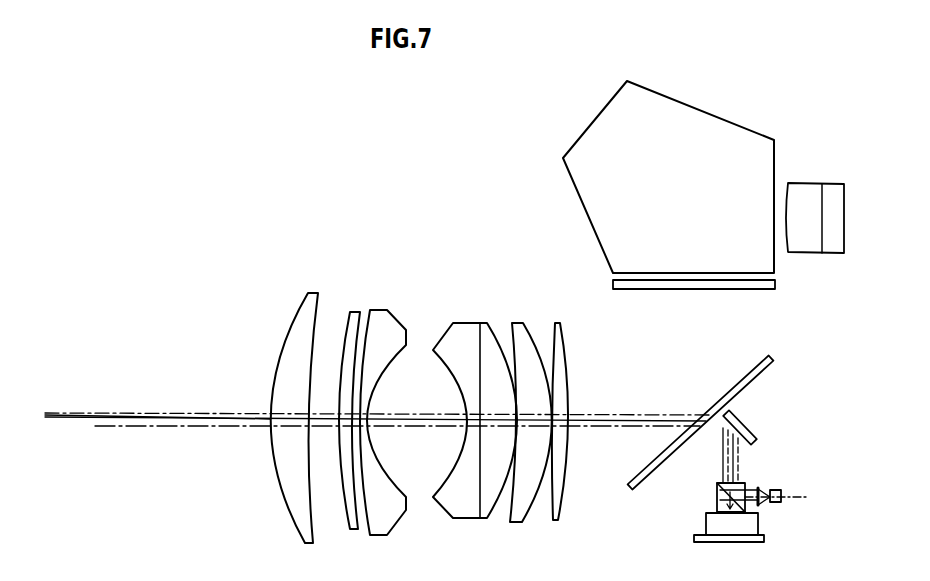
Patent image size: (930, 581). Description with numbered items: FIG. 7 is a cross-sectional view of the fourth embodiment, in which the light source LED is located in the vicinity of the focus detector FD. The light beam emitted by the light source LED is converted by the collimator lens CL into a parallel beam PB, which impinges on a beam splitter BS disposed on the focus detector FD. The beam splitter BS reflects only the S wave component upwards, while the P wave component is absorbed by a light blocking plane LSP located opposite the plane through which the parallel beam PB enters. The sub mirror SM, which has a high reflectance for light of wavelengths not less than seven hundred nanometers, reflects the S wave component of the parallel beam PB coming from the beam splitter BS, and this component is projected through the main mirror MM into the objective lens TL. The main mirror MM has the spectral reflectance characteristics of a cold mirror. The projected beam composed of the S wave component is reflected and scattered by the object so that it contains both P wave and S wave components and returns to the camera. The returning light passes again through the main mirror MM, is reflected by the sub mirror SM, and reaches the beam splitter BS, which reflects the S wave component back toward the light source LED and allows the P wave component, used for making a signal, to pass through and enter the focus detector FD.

The objective lens TL is at (424, 315).
The main mirror MM is at (771, 358).
The sub mirror SM is at (752, 435).
The beam splitter BS is at (743, 483).
The light blocking plane LSP is at (717, 502).
The parallel beam PB is at (747, 486).
The light source LED is at (773, 492).
The collimator lens CL is at (760, 505).
The focus detector FD is at (706, 518).